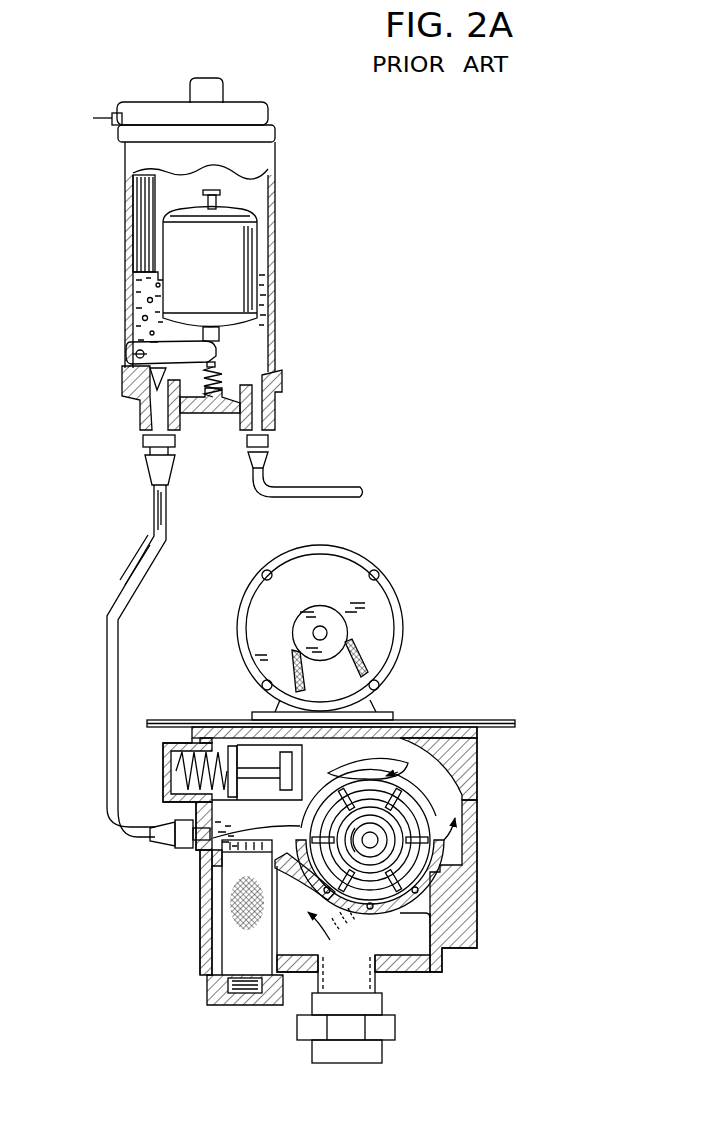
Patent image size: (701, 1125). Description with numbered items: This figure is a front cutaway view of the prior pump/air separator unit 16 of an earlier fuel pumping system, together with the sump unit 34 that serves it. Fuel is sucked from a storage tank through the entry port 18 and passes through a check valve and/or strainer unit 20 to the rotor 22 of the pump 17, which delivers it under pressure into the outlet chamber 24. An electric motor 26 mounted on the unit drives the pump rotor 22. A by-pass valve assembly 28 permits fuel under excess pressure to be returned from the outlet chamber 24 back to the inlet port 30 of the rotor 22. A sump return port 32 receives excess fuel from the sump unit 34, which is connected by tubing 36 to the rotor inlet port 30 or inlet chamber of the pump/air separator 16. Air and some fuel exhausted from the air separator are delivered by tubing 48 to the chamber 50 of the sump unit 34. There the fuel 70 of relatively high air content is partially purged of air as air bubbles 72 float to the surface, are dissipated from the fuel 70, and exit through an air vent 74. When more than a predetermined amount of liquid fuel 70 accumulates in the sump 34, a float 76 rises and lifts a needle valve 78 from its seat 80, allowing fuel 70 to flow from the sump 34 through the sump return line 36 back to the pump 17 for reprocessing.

The pump/air separator unit 16 is at (360, 851).
The pump 17 is at (480, 928).
The entry port 18 is at (357, 980).
The check valve and/or strainer unit 20 is at (247, 940).
The rotor 22 is at (401, 805).
The outlet chamber 24 is at (430, 775).
The electric motor 26 is at (328, 596).
The by-pass valve assembly 28 is at (249, 763).
The inlet port 30 is at (262, 836).
The sump return port 32 is at (195, 848).
The sump unit 34 is at (279, 192).
The tubing 36 is at (112, 680).
The tubing 48 is at (312, 490).
The chamber 50 is at (150, 207).
The fuel 70 is at (153, 262).
The air bubbles 72 is at (143, 302).
The air vent 74 is at (122, 118).
The float 76 is at (233, 268).
The needle valve 78 is at (158, 355).
The seat 80 is at (160, 390).